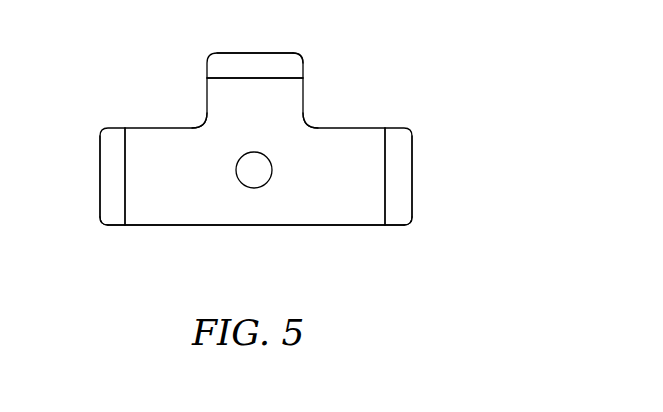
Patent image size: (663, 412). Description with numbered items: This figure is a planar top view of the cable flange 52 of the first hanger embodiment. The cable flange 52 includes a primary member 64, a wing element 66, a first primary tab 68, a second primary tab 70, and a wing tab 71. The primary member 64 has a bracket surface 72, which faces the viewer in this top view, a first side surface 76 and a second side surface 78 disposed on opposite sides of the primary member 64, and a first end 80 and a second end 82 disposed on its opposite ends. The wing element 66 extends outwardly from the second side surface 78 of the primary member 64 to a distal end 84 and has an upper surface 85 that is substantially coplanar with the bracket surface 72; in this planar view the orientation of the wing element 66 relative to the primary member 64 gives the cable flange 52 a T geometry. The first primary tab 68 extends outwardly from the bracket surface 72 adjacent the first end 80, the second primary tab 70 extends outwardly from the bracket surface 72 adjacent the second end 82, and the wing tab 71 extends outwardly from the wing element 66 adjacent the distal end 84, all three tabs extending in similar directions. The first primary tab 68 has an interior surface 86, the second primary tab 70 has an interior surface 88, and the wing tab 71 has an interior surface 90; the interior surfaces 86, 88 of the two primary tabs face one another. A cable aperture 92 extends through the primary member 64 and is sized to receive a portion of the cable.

The cable flange 52 is at (430, 97).
The primary member 64 is at (183, 244).
The wing element 66 is at (206, 98).
The first primary tab 68 is at (405, 162).
The second primary tab 70 is at (107, 183).
The wing tab 71 is at (277, 62).
The bracket surface 72 is at (197, 177).
The first side surface 76 is at (338, 227).
The second side surface 78 is at (345, 128).
The first end 80 is at (412, 198).
The second end 82 is at (97, 198).
The distal end 84 is at (240, 51).
The upper surface 85 is at (272, 116).
The interior surface 86 is at (385, 195).
The interior surface 88 is at (127, 208).
The interior surface 90 is at (290, 78).
The cable aperture 92 is at (254, 188).